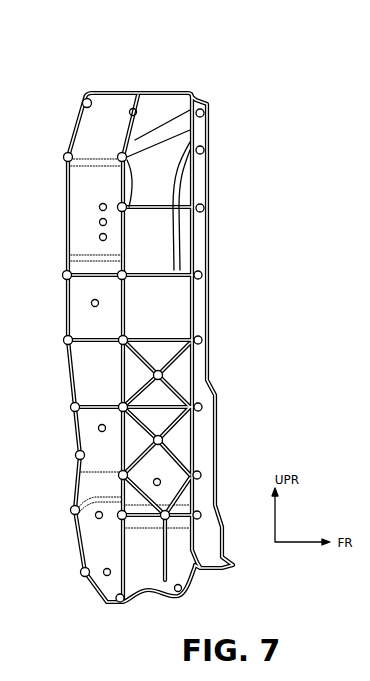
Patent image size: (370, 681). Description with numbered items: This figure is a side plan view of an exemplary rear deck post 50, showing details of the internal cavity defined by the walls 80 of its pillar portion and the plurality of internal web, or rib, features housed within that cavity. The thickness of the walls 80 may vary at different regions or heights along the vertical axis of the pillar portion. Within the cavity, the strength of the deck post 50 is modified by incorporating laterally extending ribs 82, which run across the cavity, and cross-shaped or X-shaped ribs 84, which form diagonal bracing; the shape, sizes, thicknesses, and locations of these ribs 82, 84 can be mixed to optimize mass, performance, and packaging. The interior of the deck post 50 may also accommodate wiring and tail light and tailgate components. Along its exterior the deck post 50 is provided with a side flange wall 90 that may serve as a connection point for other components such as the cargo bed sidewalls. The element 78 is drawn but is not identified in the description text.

The rear deck post 50 is at (257, 103).
The panel 78 is at (168, 100).
The walls 80 is at (132, 137).
The laterally extending ribs 82 is at (163, 272).
The cross-shaped ribs 84 is at (183, 367).
The side flange wall 90 is at (88, 370).